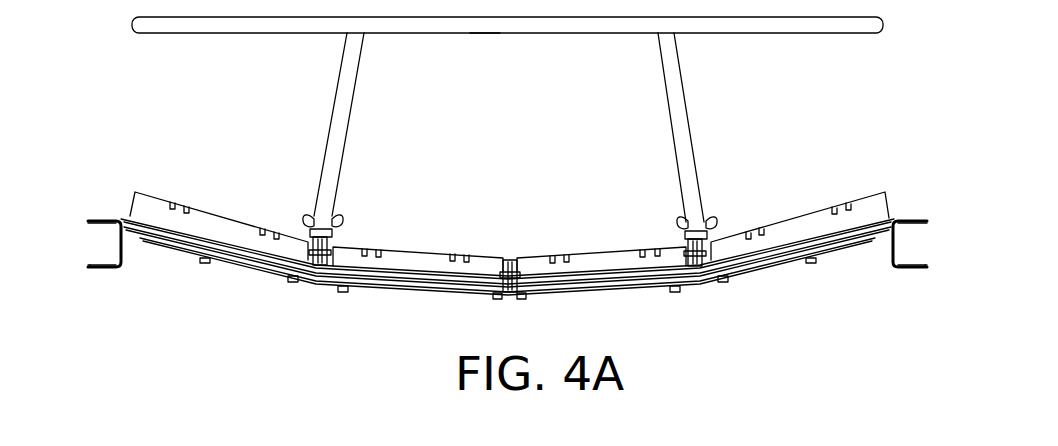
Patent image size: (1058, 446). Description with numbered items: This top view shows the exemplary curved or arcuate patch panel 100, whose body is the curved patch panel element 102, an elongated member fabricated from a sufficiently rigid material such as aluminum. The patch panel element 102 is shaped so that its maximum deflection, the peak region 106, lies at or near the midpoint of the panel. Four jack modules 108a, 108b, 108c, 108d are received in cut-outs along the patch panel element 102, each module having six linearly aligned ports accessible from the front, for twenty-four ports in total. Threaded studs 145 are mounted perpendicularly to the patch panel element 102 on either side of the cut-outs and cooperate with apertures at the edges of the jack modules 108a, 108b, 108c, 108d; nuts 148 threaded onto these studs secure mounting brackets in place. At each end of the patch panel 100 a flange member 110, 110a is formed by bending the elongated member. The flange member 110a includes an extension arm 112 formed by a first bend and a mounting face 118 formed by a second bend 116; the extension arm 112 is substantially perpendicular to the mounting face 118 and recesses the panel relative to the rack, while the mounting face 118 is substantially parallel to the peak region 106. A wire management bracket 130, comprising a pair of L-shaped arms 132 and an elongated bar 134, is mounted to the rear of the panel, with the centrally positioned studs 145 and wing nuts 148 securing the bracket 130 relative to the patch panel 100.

The patch panel 100 is at (226, 292).
The patch panel element 102 is at (708, 276).
The peak region 106 is at (570, 298).
The jack module 108a is at (222, 205).
The jack module 108b is at (442, 246).
The jack module 108c is at (582, 250).
The jack module 108d is at (790, 213).
The flange member 110 is at (116, 219).
The flange member 110a is at (98, 282).
The extension arm 112 is at (127, 248).
The second bend 116 is at (123, 266).
The mounting face 118 is at (90, 220).
The wire management bracket 130 is at (757, 40).
The L-shaped arm 132 is at (355, 55).
The elongated bar 134 is at (480, 33).
The threaded stud 145 is at (338, 216).
The wing nut 148 is at (336, 228).